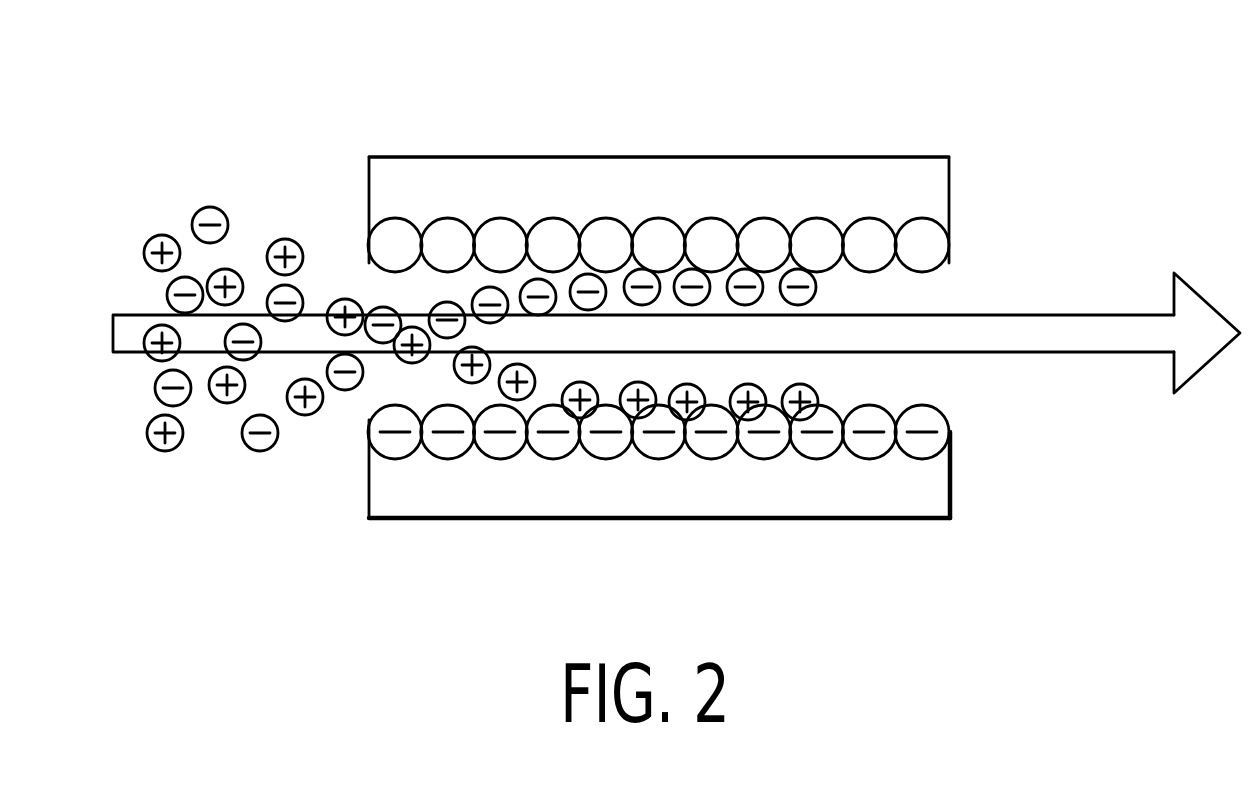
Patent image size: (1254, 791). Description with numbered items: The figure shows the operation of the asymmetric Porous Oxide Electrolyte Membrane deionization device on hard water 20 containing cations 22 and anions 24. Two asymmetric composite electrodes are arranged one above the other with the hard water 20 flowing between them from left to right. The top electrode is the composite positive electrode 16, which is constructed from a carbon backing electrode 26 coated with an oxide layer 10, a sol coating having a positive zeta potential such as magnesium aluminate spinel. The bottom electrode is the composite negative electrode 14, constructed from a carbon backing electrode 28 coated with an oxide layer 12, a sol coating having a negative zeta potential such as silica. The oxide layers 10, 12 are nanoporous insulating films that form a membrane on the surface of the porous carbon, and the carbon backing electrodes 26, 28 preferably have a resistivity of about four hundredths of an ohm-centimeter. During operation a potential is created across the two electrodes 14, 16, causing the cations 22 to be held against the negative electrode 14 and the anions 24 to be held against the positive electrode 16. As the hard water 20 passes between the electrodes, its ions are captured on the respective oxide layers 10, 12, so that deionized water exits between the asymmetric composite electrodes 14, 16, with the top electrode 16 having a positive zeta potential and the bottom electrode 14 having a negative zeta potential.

The oxide layer 10 is at (922, 250).
The oxide layer 12 is at (928, 405).
The composite negative electrode 14 is at (693, 490).
The composite positive electrode 16 is at (684, 162).
The hard water 20 is at (1075, 315).
The cations 22 is at (148, 238).
The anions 24 is at (220, 208).
The carbon backing electrode 26 is at (862, 157).
The carbon backing electrode 28 is at (870, 520).